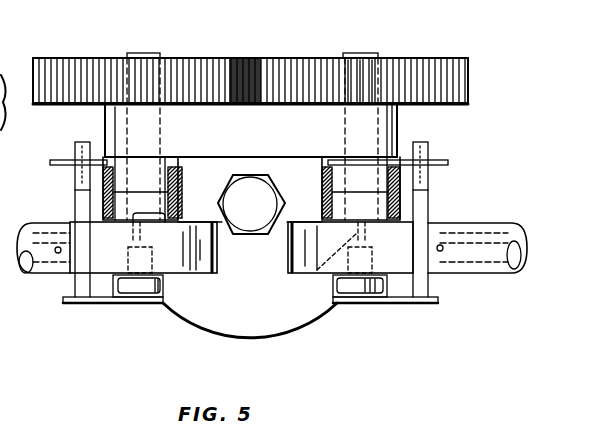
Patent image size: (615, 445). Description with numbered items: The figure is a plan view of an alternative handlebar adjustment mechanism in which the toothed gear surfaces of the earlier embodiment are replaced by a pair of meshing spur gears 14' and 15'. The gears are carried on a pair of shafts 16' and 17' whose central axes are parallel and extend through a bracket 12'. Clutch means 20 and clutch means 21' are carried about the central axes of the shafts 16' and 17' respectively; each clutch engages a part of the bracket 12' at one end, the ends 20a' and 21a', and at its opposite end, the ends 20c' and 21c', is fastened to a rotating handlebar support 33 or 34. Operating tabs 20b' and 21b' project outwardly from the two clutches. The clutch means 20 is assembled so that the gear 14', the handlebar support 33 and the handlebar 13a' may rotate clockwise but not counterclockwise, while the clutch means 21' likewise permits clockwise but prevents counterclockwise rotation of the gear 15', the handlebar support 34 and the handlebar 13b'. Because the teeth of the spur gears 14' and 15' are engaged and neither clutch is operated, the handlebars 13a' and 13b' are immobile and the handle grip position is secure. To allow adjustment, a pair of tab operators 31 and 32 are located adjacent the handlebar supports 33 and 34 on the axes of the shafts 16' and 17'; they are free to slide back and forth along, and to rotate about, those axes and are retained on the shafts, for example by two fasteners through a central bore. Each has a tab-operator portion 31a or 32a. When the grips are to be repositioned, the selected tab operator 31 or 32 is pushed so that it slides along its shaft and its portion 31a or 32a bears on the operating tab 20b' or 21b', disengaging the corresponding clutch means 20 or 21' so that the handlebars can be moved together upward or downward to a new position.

The spur gear 15' is at (250, 59).
The shaft 16' is at (396, 59).
The shaft 17' is at (166, 118).
The spur gear 14' is at (351, 116).
The bracket 12' is at (251, 117).
The clutch means 20 is at (408, 202).
The clutch means 21' is at (63, 192).
The end of clutch means 21a' is at (211, 186).
The end of clutch means 20a' is at (298, 186).
The operating tab 21b' is at (63, 149).
The operating tab 20b' is at (413, 151).
The tab-operator portion 32a is at (82, 141).
The tab-operator portion 31a is at (424, 145).
The tab operator 32 is at (144, 305).
The tab operator 31 is at (420, 306).
The handlebar support 34 is at (191, 276).
The handlebar support 33 is at (291, 258).
The end of clutch means 21c' is at (121, 243).
The end of clutch means 20c' is at (250, 311).
The handlebar 13b' is at (39, 270).
The handlebar 13a' is at (477, 272).